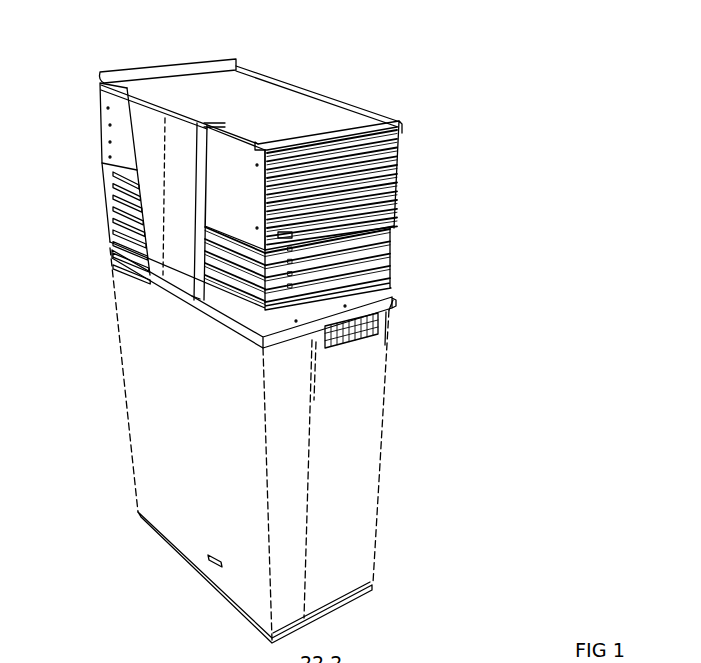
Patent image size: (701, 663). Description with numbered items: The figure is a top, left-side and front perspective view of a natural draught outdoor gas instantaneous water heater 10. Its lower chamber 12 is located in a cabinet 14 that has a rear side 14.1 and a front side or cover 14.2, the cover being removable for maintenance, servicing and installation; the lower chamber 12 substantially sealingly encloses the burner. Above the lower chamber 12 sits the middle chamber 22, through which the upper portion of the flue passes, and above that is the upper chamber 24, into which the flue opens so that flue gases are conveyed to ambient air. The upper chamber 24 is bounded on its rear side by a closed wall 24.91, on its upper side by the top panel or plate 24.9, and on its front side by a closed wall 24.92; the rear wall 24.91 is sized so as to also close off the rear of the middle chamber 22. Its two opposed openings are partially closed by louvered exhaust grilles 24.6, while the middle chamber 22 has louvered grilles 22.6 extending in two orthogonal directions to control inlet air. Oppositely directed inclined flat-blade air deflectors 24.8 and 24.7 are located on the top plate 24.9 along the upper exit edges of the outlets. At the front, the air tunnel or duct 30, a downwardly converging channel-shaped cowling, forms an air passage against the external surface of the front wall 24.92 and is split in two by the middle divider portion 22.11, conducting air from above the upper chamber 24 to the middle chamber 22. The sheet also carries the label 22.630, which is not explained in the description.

The natural draught outdoor water heater 10 is at (467, 411).
The lower chamber 12 is at (352, 486).
The cabinet 14 is at (397, 352).
The rear side 14.1 is at (334, 567).
The front side or cover 14.2 is at (172, 520).
The middle chamber 22 is at (230, 296).
The grilles 22.6 is at (357, 265).
The middle divider portion 22.11 is at (270, 585).
The side louvers 22.630 is at (165, 218).
The upper chamber 24 is at (335, 184).
The exhaust grilles 24.6 is at (353, 183).
The air deflector 24.7 is at (358, 128).
The air deflector 24.8 is at (219, 62).
The top panel or plate 24.9 is at (295, 105).
The rear wall 24.91 is at (400, 150).
The front closed wall 24.92 is at (221, 161).
The front air tunnel or duct 30 is at (148, 150).